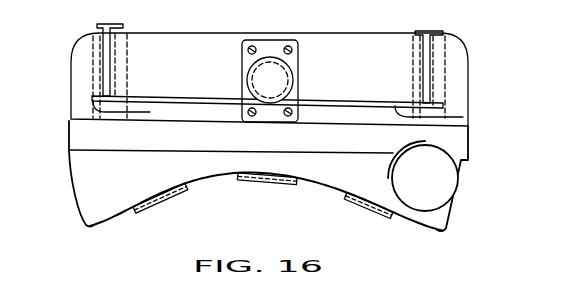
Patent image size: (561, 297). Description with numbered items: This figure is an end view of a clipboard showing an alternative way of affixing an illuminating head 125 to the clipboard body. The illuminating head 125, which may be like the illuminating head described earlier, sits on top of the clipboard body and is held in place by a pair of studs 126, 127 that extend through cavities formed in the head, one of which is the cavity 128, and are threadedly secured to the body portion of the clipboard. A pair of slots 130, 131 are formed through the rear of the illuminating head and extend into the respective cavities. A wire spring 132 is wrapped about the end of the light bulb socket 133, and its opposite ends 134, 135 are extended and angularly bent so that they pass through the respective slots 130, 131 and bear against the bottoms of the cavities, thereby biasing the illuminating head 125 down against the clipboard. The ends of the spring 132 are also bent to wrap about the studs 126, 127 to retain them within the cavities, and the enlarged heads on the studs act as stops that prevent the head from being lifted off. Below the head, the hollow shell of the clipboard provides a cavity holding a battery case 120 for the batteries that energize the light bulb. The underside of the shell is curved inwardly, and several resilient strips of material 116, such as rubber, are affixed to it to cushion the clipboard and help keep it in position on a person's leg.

The resilient strips of material 116 is at (151, 202).
The battery case 120 is at (435, 187).
The illuminating head 125 is at (453, 91).
The stud 126 is at (112, 24).
The stud 127 is at (423, 31).
The cavity 128 is at (95, 83).
The slot 130 is at (107, 62).
The slot 131 is at (428, 45).
The wire spring 132 is at (172, 97).
The light bulb socket 133 is at (289, 66).
The spring end 134 is at (75, 103).
The spring end 135 is at (463, 117).